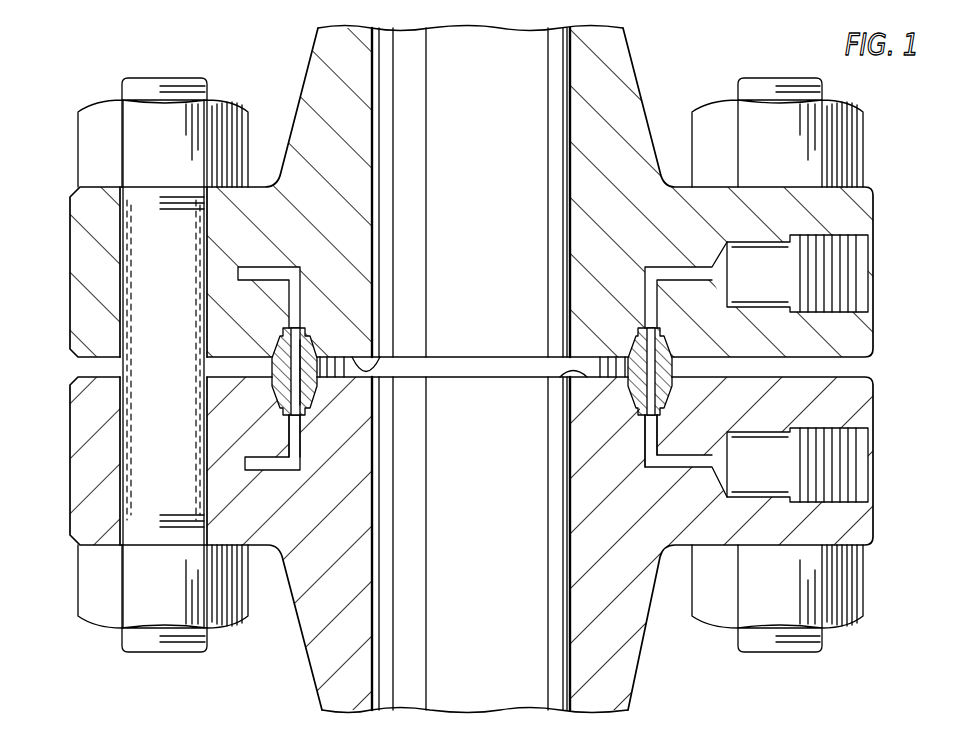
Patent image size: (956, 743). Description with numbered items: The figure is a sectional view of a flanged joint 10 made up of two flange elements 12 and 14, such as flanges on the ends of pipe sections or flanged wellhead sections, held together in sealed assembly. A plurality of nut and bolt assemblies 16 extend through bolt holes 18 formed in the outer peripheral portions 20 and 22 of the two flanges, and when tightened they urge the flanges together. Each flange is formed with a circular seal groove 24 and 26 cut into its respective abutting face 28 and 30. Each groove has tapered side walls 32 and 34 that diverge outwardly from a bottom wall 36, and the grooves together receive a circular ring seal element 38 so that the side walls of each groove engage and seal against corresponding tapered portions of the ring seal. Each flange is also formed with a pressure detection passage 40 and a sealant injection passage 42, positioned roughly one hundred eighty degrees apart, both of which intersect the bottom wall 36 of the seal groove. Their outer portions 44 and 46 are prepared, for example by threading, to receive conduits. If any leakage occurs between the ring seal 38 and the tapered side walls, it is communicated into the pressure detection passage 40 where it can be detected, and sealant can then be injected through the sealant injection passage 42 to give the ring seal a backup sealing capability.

The flanged joint 10 is at (265, 60).
The flange element 12 is at (618, 62).
The flange element 14 is at (320, 667).
The nut and bolt assemblies 16 is at (805, 652).
The bolt holes 18 is at (122, 298).
The outer peripheral portion 20 is at (80, 208).
The outer peripheral portion 22 is at (80, 493).
The seal groove 24 is at (645, 330).
The seal groove 26 is at (641, 420).
The abutting face 28 is at (370, 365).
The abutting face 30 is at (575, 378).
The tapered side wall 32 is at (278, 382).
The tapered side wall 34 is at (318, 388).
The bottom wall 36 is at (292, 414).
The ring seal element 38 is at (612, 395).
The pressure detection passage 40 is at (666, 266).
The sealant injection passage 42 is at (266, 270).
The outer portion of pressure detection passage 44 is at (862, 300).
The outer portion of sealant injection passage 46 is at (860, 475).